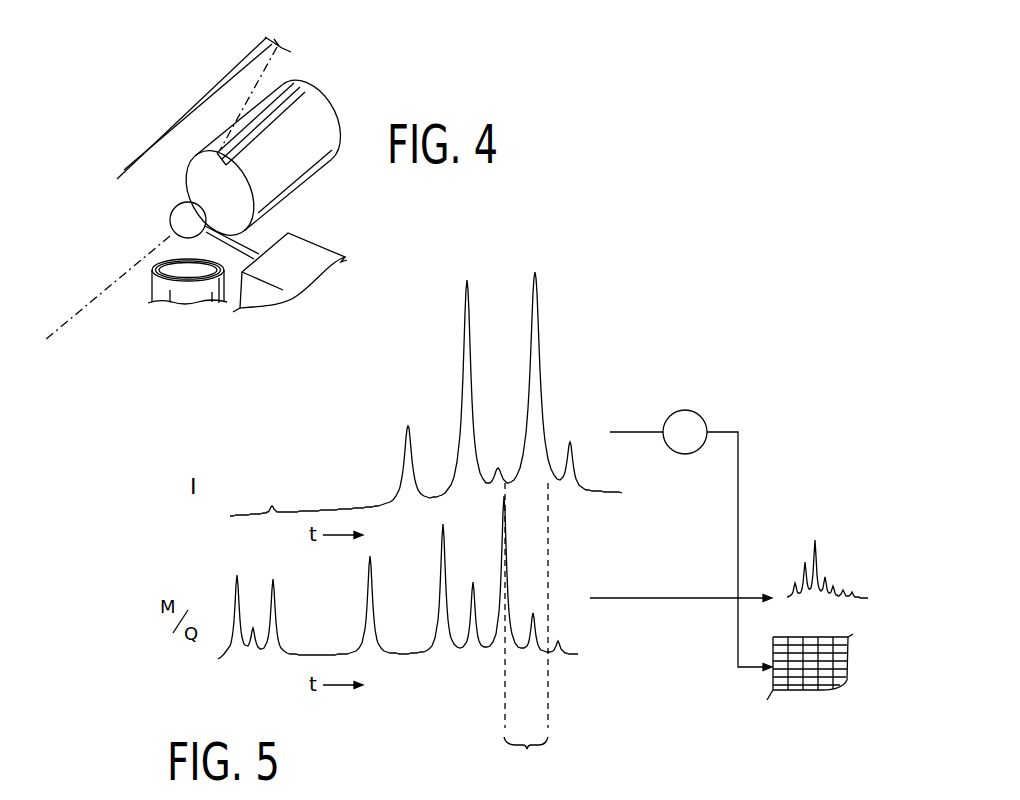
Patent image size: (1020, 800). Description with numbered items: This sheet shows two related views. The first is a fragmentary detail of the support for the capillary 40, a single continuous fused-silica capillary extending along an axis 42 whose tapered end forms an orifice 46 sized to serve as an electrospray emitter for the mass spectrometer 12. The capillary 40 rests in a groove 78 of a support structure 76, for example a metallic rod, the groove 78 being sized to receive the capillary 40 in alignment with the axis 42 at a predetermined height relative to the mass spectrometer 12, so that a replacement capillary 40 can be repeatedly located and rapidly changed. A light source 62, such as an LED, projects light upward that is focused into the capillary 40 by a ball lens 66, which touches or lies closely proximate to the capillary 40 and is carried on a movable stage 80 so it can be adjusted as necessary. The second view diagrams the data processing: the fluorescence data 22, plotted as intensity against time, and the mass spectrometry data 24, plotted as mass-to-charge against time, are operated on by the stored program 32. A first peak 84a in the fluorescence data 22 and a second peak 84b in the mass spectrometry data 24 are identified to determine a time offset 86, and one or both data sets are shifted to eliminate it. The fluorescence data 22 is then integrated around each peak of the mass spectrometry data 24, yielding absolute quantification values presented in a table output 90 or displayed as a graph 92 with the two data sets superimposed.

In FIG. 4, the mass spectrometer 12 is at (47, 227).
In FIG. 5, the fluorescence data 22 is at (427, 387).
In FIG. 5, the mass spectrometry data 24 is at (435, 687).
In FIG. 5, the stored program 32 is at (680, 327).
In FIG. 4, the capillary 40 is at (208, 100).
In FIG. 4, the axis 42 is at (95, 297).
In FIG. 4, the orifice 46 is at (100, 157).
In FIG. 4, the light source 62 is at (172, 295).
In FIG. 4, the ball lens 66 is at (183, 215).
In FIG. 4, the support structure 76 is at (327, 123).
In FIG. 4, the groove 78 is at (290, 86).
In FIG. 4, the movable stage 80 is at (302, 240).
In FIG. 5, the first peak 84a is at (540, 348).
In FIG. 5, the second peak 84b is at (507, 518).
In FIG. 5, the offset 86 is at (526, 631).
In FIG. 5, the table output 90 is at (823, 713).
In FIG. 5, the graph 92 is at (800, 507).